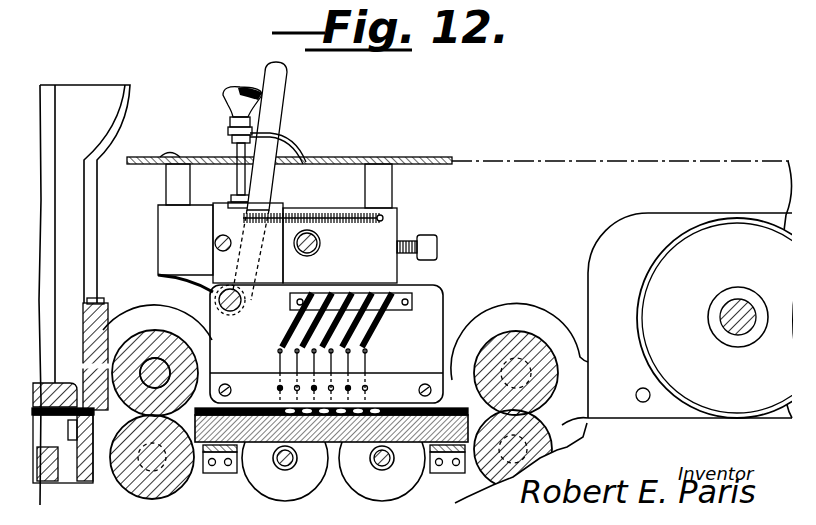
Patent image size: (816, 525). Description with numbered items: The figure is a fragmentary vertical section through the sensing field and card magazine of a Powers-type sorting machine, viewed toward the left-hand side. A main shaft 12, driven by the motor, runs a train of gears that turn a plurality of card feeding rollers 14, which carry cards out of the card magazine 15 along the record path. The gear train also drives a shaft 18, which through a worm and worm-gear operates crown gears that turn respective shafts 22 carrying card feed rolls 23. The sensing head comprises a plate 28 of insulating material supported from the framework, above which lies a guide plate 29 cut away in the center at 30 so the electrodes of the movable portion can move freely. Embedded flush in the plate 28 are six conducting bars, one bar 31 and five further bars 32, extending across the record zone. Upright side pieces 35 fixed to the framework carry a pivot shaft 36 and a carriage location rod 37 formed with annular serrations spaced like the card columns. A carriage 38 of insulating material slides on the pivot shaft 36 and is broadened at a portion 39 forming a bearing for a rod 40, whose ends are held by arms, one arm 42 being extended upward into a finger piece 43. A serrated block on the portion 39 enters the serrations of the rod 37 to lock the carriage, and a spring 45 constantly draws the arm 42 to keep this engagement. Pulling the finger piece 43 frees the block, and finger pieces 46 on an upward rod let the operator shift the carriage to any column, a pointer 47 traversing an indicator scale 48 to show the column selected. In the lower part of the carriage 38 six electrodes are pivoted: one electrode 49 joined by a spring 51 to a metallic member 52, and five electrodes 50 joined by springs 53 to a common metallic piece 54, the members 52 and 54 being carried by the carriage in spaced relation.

The main shaft 12 is at (153, 310).
The card feeding rollers 14 is at (133, 437).
The card magazine 15 is at (80, 95).
The shaft 18 is at (537, 372).
The shaft 22 is at (726, 305).
The card feed roll 23 is at (718, 240).
The plate 28 is at (382, 458).
The guide plate 29 is at (450, 402).
The cut-away 30 is at (325, 388).
The bar 31 is at (357, 463).
The bars 32 is at (285, 458).
The upright side pieces 35 is at (382, 235).
The pivot shaft 36 is at (218, 301).
The carriage location rod 37 is at (320, 246).
The carriage 38 is at (440, 327).
The broadened portion 39 is at (248, 243).
The rod 40 is at (217, 240).
The arm 42 is at (210, 263).
The finger piece 43 is at (277, 81).
The spring 45 is at (338, 214).
The finger pieces 46 is at (235, 102).
The pointer 47 is at (290, 140).
The indicator scale 48 is at (345, 160).
The electrode 49 is at (385, 353).
The electrodes 50 is at (285, 355).
The spring 51 is at (392, 330).
The metallic member 52 is at (408, 302).
The springs 53 is at (290, 322).
The common metallic piece 54 is at (290, 298).